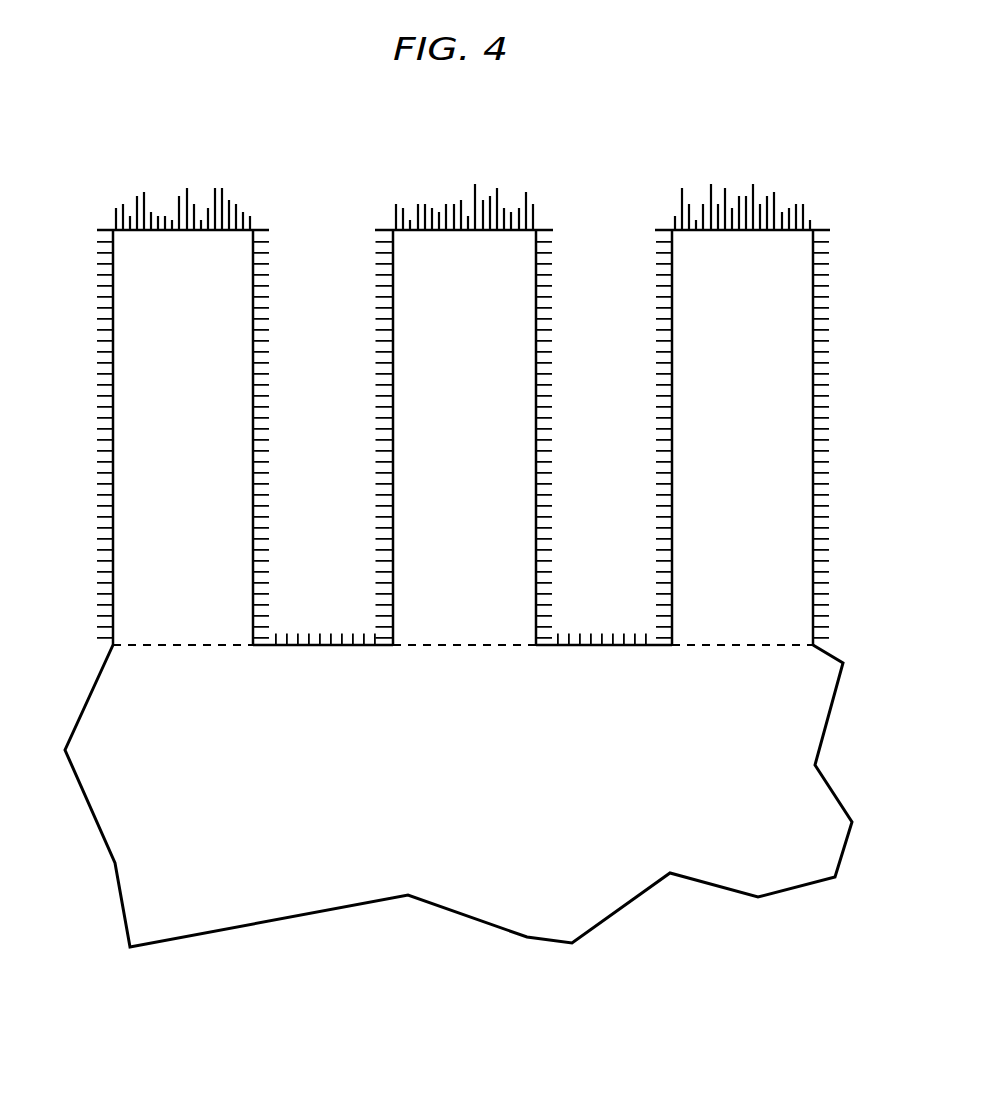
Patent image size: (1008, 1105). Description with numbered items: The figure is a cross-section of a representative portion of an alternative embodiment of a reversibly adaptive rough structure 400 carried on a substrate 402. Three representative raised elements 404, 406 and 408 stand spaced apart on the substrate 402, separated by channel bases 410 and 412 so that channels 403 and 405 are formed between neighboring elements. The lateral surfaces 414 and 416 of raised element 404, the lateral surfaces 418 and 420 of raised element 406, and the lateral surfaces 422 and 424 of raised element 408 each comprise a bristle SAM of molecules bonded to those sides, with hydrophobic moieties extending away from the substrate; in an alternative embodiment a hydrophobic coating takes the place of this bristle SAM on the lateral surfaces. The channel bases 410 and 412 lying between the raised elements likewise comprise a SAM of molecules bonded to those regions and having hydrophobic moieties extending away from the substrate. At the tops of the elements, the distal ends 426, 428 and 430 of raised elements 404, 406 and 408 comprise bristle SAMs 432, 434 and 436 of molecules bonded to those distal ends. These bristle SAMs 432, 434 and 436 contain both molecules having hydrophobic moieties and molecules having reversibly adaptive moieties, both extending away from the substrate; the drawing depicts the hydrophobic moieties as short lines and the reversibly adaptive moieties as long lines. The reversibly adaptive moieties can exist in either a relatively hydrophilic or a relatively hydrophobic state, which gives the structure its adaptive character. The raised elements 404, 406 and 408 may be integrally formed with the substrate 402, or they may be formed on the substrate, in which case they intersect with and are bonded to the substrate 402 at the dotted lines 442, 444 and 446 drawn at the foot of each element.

The reversibly adaptive rough structure 400 is at (784, 135).
The substrate 402 is at (486, 808).
The channel 403 is at (340, 329).
The raised element 404 is at (199, 450).
The channel 405 is at (620, 329).
The raised element 406 is at (483, 450).
The raised element 408 is at (758, 450).
The channel base 410 is at (312, 648).
The channel base 412 is at (601, 648).
The lateral surface 414 is at (98, 478).
The lateral surface 416 is at (262, 451).
The lateral surface 418 is at (378, 556).
The lateral surface 420 is at (546, 503).
The lateral surface 422 is at (655, 413).
The lateral surface 424 is at (825, 346).
The distal end 426 is at (183, 232).
The distal end 428 is at (466, 232).
The distal end 430 is at (750, 232).
The bristle SAM 432 is at (183, 192).
The bristle SAM 434 is at (460, 192).
The bristle SAM 436 is at (745, 192).
The dotted line 442 is at (176, 648).
The dotted line 444 is at (461, 648).
The dotted line 446 is at (751, 648).